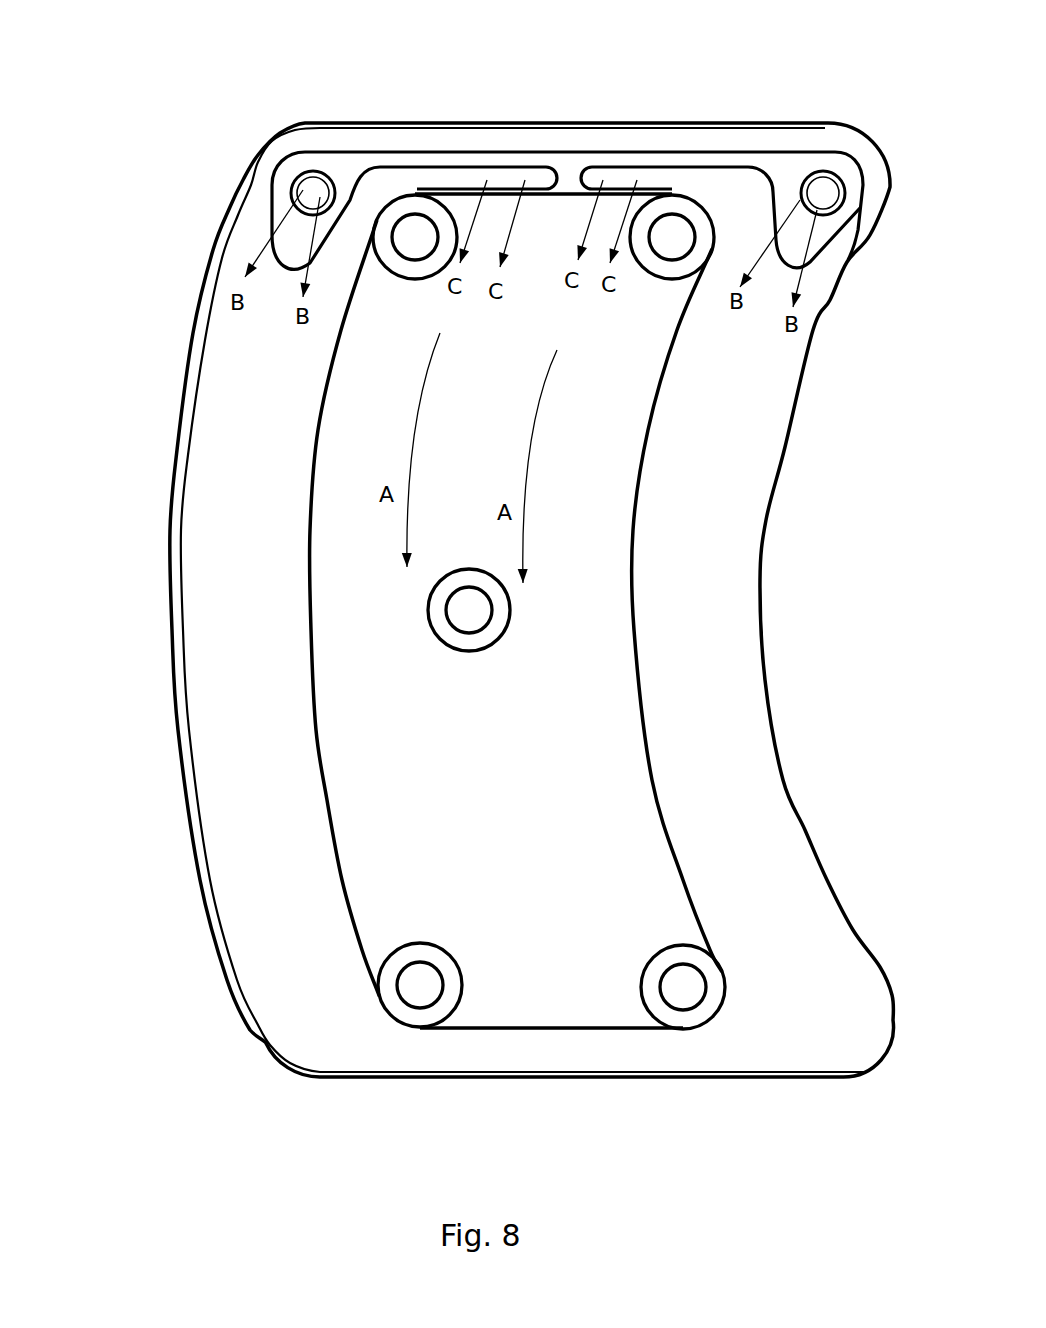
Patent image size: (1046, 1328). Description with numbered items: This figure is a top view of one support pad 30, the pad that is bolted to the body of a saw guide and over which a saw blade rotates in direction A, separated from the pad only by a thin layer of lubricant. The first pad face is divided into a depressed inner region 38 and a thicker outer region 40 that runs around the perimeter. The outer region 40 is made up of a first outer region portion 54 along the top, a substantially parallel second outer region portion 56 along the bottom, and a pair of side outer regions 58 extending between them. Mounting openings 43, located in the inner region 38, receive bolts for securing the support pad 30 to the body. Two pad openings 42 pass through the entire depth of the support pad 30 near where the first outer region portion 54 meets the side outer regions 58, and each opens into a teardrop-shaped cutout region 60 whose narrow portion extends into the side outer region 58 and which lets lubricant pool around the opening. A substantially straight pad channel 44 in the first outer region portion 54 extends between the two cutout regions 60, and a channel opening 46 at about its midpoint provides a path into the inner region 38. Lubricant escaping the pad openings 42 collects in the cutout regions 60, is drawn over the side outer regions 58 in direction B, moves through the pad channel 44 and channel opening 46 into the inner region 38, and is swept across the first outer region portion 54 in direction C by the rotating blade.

The support pad 30 is at (762, 568).
The inner region 38 is at (537, 997).
The outer region 40 is at (225, 812).
The pad opening 42 is at (310, 182).
The mounting opening 43 is at (683, 987).
The pad channel 44 is at (480, 160).
The channel opening 46 is at (567, 180).
The first outer region portion 54 is at (637, 143).
The second outer region portion 56 is at (583, 1047).
The side outer region 58 is at (205, 642).
The cutout region 60 is at (290, 252).